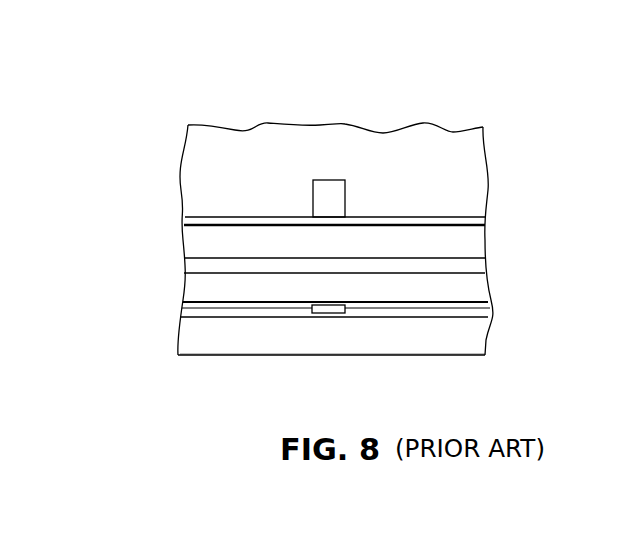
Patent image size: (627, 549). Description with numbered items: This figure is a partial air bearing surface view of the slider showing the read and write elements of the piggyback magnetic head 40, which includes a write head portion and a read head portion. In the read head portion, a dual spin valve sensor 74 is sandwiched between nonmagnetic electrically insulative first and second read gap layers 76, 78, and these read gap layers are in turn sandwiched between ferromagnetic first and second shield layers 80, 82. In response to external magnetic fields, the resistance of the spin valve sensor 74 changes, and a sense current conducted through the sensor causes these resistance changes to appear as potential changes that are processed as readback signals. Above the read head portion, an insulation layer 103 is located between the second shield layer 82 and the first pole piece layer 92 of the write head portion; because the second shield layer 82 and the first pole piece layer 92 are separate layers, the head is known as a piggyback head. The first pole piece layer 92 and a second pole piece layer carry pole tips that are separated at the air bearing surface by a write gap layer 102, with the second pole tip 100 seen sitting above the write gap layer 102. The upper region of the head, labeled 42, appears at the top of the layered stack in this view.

The piggyback magnetic head 40 is at (505, 139).
The top layer 42 is at (188, 151).
The second pole tip 100 is at (327, 185).
The write gap layer 102 is at (250, 217).
The first pole piece layer 92 is at (189, 240).
The insulation layer 103 is at (478, 266).
The second shield layer 82 is at (187, 289).
The second read gap layer 78 is at (447, 307).
The dual spin valve sensor 74 is at (328, 313).
The first read gap layer 76 is at (242, 317).
The first shield layer 80 is at (478, 338).